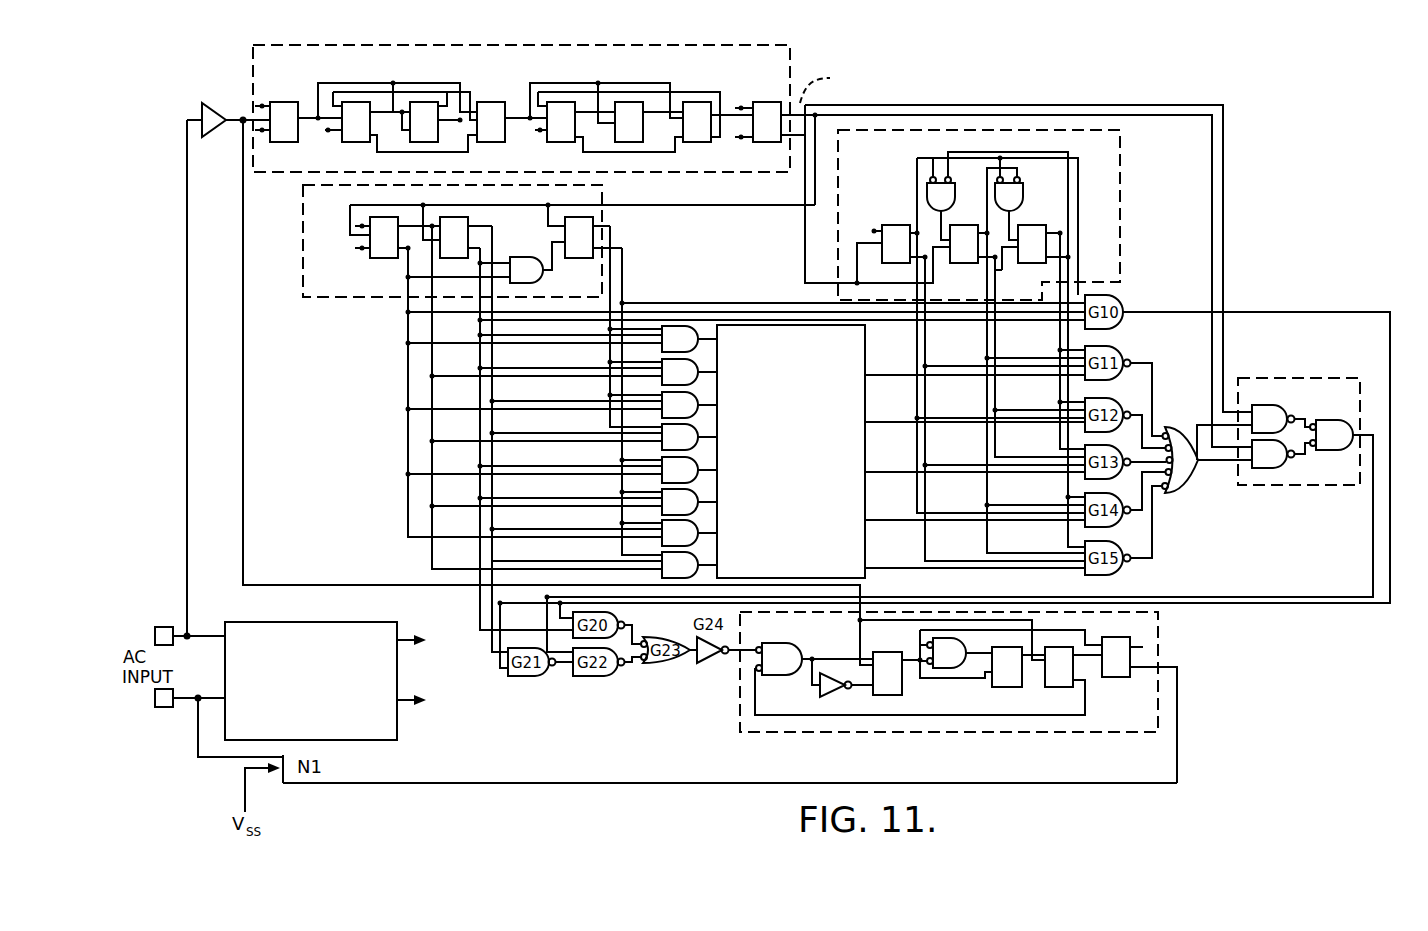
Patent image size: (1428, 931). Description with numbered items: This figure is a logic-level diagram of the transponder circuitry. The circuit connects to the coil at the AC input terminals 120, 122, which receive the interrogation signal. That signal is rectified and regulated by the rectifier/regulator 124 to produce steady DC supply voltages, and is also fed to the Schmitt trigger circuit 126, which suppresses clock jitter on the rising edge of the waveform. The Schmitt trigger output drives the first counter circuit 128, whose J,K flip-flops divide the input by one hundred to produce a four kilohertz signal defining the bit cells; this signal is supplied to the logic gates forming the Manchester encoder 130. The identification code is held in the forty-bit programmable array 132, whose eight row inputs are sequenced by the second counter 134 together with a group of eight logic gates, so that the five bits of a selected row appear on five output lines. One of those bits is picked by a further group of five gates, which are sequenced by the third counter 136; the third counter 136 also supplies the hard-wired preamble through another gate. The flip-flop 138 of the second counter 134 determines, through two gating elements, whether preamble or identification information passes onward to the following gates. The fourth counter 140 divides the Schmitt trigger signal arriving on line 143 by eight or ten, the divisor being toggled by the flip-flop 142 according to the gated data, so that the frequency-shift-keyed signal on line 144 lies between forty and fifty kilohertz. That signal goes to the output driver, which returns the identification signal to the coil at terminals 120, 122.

The AC input terminal 120 is at (155, 637).
The AC input terminal 122 is at (155, 700).
The rectifier/regulator 124 is at (360, 622).
The Schmitt trigger circuit 126 is at (212, 103).
The first counter circuit 128 is at (785, 48).
The Manchester encoder 130 is at (1283, 378).
The programmable array 132 is at (866, 328).
The second counter 134 is at (340, 297).
The third counter 136 is at (1120, 230).
The flip-flop 138 is at (453, 258).
The fourth counter 140 is at (738, 690).
The flip-flop 142 is at (893, 695).
The line 143 is at (243, 508).
The line 144 is at (562, 783).